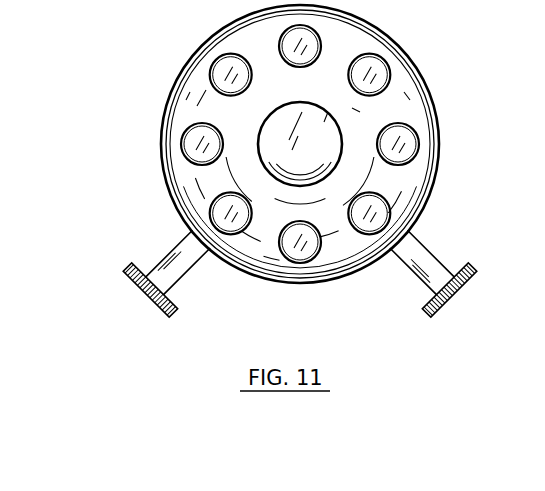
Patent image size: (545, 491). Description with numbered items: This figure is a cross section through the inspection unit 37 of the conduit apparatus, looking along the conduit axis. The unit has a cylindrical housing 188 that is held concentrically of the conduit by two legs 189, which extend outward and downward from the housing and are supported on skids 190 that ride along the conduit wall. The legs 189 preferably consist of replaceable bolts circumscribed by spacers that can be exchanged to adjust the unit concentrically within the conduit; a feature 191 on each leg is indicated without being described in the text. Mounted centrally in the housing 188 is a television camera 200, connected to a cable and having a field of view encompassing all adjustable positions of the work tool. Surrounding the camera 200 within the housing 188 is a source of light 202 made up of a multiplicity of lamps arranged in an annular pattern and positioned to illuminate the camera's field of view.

The inspection unit 37 is at (386, 23).
The cylindrical housing 188 is at (172, 71).
The legs 189 is at (182, 248).
The skids 190 is at (140, 293).
The leg slots 191 is at (186, 275).
The television camera 200 is at (315, 168).
The source of light 202 is at (384, 127).